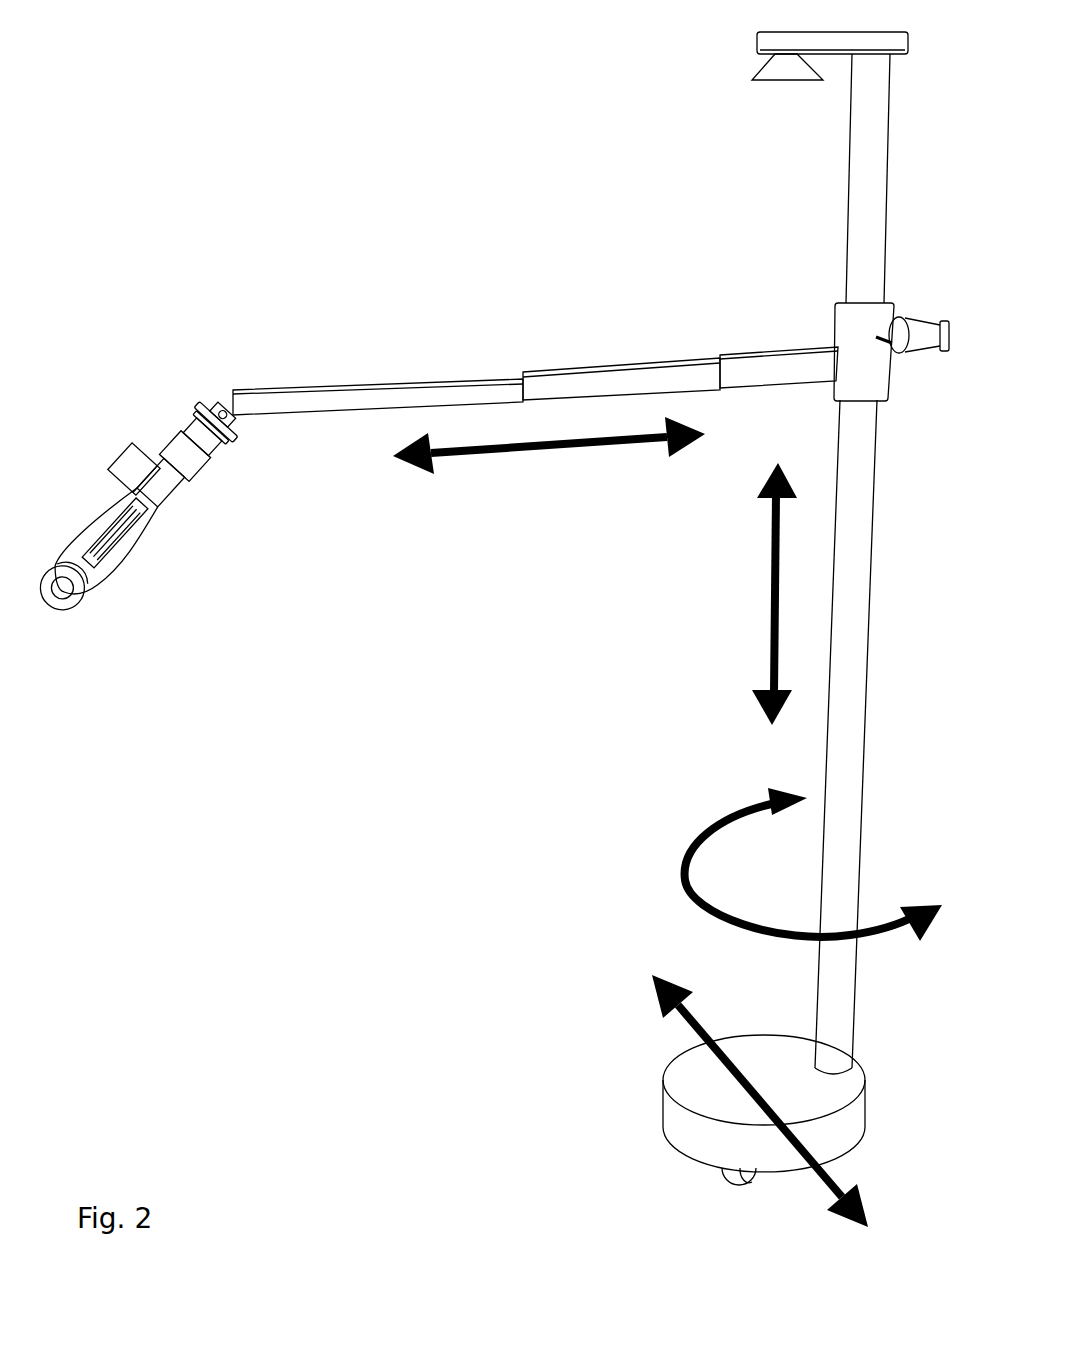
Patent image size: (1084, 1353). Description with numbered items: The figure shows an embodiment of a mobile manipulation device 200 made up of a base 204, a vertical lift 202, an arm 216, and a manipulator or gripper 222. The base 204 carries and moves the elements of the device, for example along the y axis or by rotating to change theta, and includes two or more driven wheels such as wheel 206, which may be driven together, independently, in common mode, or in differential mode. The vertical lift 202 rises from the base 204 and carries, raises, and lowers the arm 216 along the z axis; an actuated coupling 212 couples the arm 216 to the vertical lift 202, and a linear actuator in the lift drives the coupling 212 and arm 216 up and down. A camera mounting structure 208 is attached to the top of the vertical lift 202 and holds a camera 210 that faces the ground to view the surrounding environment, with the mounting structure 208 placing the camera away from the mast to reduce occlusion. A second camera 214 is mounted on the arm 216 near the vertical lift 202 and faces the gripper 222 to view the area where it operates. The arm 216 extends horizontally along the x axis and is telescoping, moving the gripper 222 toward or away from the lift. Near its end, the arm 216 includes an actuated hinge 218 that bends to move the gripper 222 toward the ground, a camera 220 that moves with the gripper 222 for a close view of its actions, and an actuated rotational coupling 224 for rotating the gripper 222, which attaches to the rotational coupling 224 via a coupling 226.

The mobile manipulation device 200 is at (368, 62).
The vertical lift 202 is at (872, 568).
The base 204 is at (868, 1117).
The wheel 206 is at (716, 1177).
The camera mounting structure 208 is at (905, 56).
The camera 210 is at (757, 74).
The coupling 212 is at (838, 320).
The camera 214 is at (895, 312).
The arm 216 is at (600, 362).
The hinge 218 is at (232, 392).
The camera 220 is at (136, 456).
The gripper 222 is at (127, 567).
The rotational coupling 224 is at (243, 439).
The coupling 226 is at (197, 470).